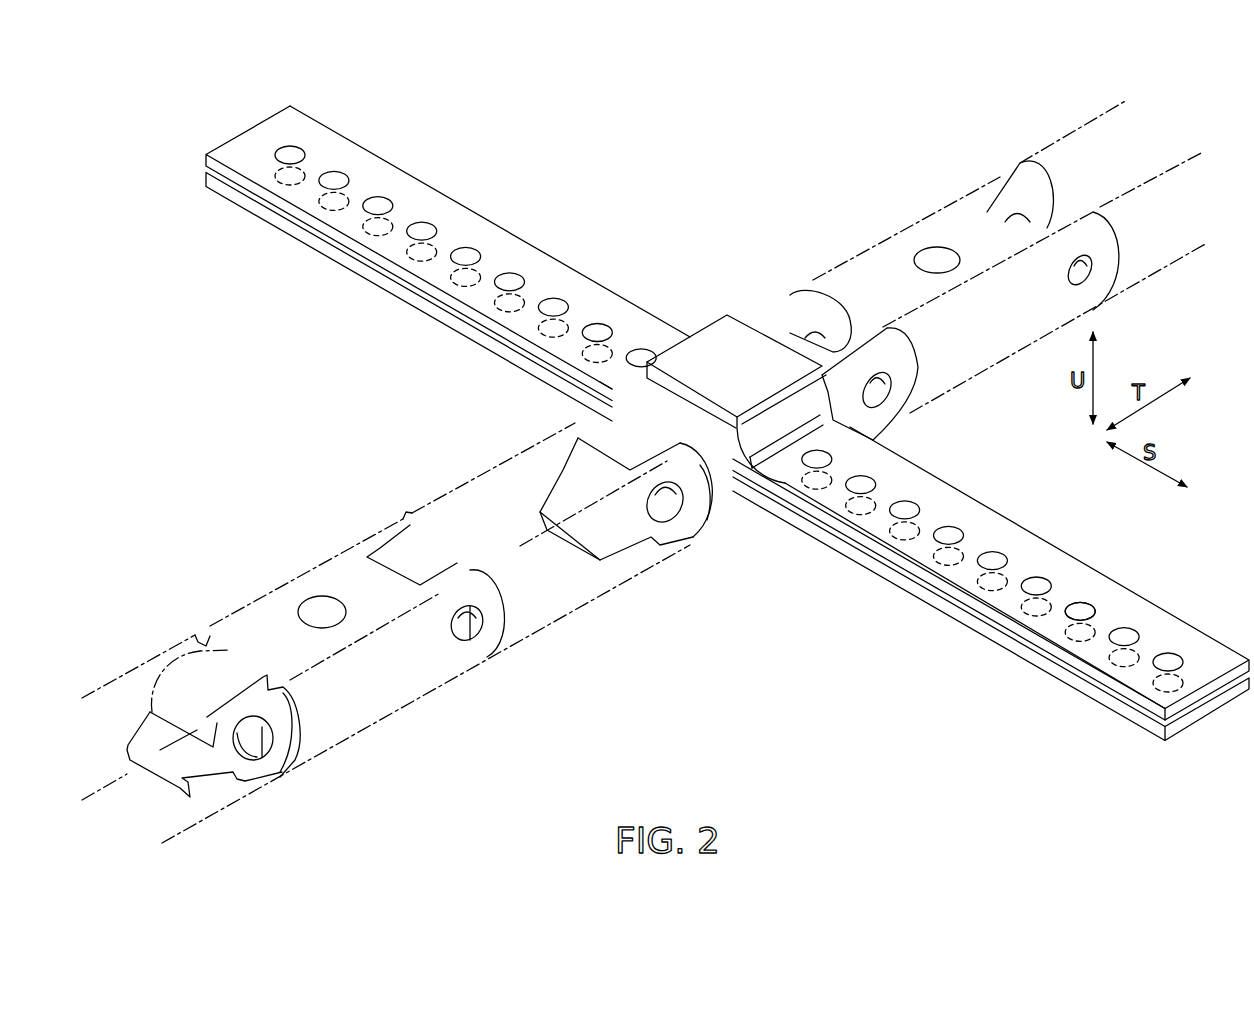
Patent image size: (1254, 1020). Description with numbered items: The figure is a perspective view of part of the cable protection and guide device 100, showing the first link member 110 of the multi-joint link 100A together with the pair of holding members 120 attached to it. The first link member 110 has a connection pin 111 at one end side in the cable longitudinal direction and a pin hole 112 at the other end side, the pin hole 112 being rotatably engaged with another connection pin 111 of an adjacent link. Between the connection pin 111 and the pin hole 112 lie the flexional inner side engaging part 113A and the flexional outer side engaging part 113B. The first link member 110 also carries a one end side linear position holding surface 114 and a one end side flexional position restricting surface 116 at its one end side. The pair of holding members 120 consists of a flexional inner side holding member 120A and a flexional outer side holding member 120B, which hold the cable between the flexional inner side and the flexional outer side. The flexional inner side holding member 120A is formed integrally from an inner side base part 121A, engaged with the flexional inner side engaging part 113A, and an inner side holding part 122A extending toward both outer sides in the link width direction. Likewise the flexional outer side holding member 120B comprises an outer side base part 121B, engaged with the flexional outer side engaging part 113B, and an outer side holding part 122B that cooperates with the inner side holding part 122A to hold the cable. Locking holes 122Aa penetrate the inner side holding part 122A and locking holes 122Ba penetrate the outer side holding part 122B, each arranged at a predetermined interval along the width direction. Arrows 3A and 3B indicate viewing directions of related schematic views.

The cable protection and guide device 100 is at (523, 119).
The multi-joint link 100A is at (907, 190).
The first link member 110 is at (781, 298).
The connection pin 111 is at (688, 522).
The pin hole 112 is at (887, 390).
The flexional inner side engaging part 113A is at (747, 507).
The flexional outer side engaging part 113B is at (618, 410).
The one end side linear position holding surface 114 is at (633, 530).
The one end side flexional position restricting surface 116 is at (543, 490).
The pair of holding members 120 is at (1012, 757).
The flexional inner side holding member 120A is at (872, 722).
The flexional outer side holding member 120B is at (1052, 722).
The inner side base part 121A is at (753, 502).
The inner side holding part 122A is at (873, 553).
The outer side base part 121B is at (742, 372).
The outer side holding part 122B is at (1053, 620).
The locking holes 122Ba is at (1080, 602).
The locking holes 122Aa is at (1096, 624).
The arrow 3A is at (700, 205).
The arrow 3B is at (1183, 124).